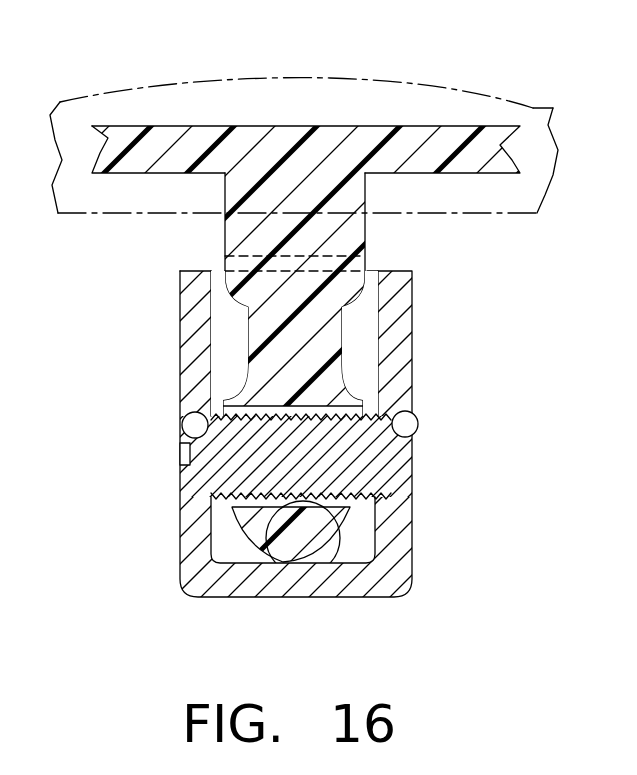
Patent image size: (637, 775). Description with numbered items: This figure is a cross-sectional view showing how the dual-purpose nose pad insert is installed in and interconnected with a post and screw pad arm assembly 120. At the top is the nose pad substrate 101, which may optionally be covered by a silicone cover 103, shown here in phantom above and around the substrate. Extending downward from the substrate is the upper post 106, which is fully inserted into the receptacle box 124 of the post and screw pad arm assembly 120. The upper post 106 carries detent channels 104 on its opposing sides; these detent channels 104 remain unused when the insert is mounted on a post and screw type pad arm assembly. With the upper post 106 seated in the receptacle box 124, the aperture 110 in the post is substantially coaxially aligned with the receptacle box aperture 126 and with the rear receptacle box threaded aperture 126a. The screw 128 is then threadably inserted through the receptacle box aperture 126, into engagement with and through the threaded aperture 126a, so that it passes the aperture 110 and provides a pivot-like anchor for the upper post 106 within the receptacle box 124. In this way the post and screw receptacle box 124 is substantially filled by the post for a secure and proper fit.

The nose pad substrate 101 is at (473, 127).
The silicone cover 103 is at (330, 80).
The detent channels 104 is at (247, 327).
The upper post 106 is at (307, 360).
The aperture 110 is at (280, 557).
The post and screw pad arm assembly 120 is at (475, 487).
The receptacle box 124 is at (407, 548).
The receptacle box aperture 126 is at (183, 420).
The rear receptacle box threaded aperture 126a is at (392, 494).
The screw 128 is at (185, 482).